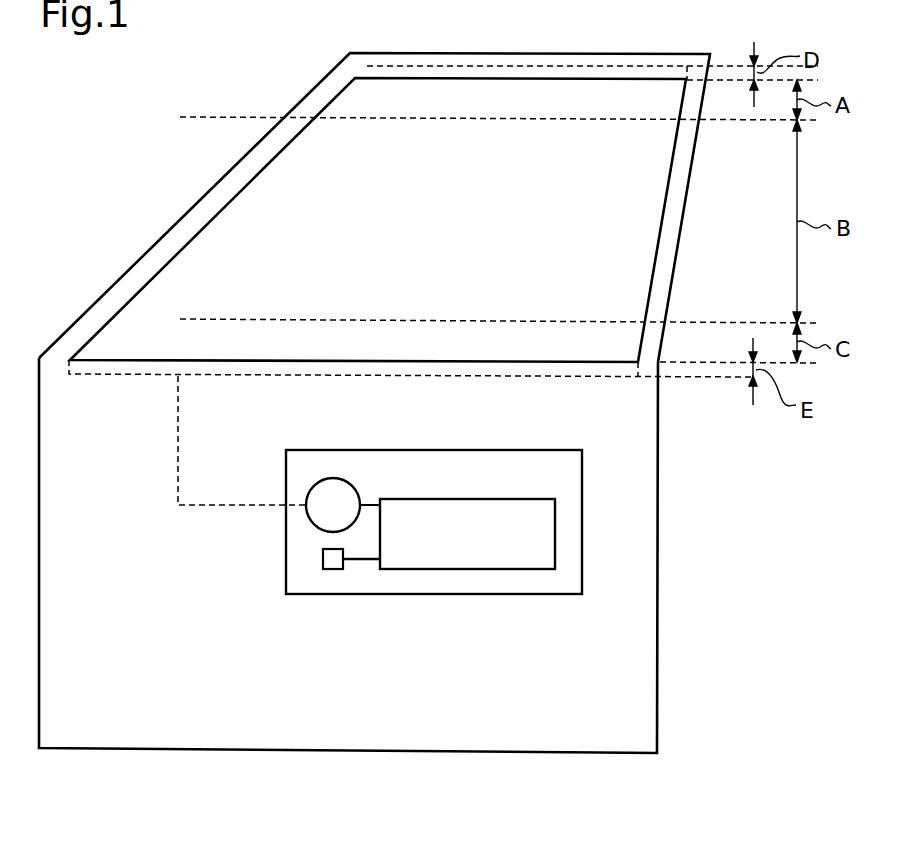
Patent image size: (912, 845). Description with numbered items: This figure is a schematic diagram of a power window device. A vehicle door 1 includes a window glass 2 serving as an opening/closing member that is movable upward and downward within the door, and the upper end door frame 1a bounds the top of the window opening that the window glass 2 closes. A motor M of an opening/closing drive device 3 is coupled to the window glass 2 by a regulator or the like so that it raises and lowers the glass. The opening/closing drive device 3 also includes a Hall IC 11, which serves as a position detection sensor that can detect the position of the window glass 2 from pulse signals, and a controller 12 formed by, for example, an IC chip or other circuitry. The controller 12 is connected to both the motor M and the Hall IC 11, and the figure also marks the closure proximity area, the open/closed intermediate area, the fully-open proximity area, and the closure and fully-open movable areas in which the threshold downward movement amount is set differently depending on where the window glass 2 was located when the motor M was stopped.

The vehicle door 1 is at (640, 479).
The upper end door frame 1a is at (476, 53).
The window glass 2 is at (642, 200).
The opening/closing drive device 3 is at (453, 450).
The Hall IC 11 is at (336, 569).
The controller 12 is at (473, 498).